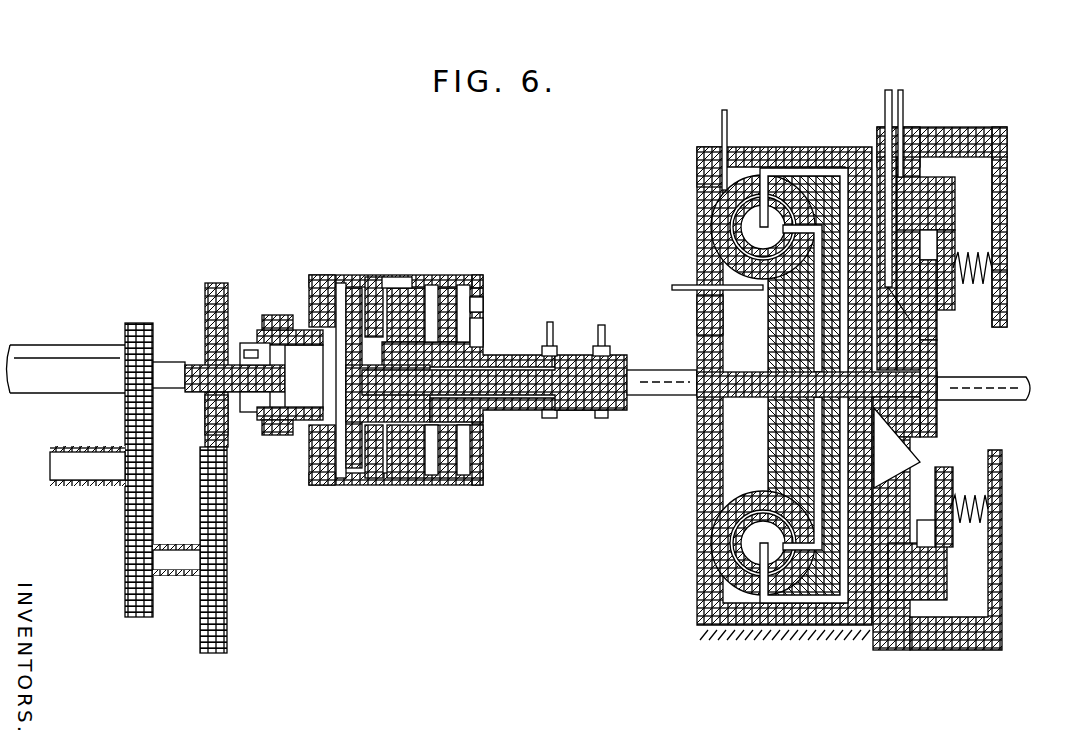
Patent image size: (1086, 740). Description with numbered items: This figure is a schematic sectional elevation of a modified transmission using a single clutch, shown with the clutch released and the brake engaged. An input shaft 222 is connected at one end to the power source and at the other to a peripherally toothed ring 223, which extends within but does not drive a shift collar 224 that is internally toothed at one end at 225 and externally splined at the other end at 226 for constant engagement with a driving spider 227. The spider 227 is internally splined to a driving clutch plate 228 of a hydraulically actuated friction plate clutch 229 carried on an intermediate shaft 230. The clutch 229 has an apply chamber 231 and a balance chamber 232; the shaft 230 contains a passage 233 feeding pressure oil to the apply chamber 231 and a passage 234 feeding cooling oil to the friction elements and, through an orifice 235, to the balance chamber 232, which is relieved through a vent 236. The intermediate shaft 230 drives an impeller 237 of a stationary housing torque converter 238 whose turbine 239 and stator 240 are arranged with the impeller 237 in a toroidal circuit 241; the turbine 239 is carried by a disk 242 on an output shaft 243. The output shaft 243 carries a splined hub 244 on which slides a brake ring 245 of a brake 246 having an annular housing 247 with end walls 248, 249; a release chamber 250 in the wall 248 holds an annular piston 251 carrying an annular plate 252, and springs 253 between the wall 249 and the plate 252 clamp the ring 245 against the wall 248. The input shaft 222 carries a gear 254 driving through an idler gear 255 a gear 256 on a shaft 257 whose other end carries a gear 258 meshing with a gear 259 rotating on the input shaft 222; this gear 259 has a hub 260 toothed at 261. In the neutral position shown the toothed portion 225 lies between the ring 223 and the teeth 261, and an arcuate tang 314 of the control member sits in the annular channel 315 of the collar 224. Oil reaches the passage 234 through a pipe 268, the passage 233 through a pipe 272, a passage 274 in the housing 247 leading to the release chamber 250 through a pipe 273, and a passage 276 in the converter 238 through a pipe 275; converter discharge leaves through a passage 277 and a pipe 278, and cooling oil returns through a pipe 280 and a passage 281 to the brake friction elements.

The input shaft 222 is at (66, 369).
The peripherally toothed ring 223 is at (313, 388).
The shift collar 224 is at (283, 437).
The internal toothed portion 225 is at (250, 343).
The external splined portion 226 is at (305, 323).
The driving spider 227 is at (315, 273).
The driving clutch plate 228 is at (377, 282).
The friction plate clutch 229 is at (410, 259).
The intermediate shaft 230 is at (513, 410).
The apply chamber 231 is at (432, 285).
The balance chamber 232 is at (470, 287).
The passage 233 is at (537, 413).
The passage 234 is at (513, 365).
The orifice 235 is at (483, 305).
The vent 236 is at (483, 323).
The impeller 237 is at (790, 292).
The hydraulic torque converter 238 is at (771, 131).
The turbine 239 is at (792, 190).
The stator 240 is at (713, 206).
The toroidal circuit 241 is at (722, 228).
The disk 242 is at (830, 342).
The output shaft 243 is at (990, 374).
The peripherally splined hub 244 is at (937, 421).
The brake ring 245 is at (973, 328).
The brake 246 is at (976, 117).
The annular housing 247 is at (1007, 116).
The end wall 248 is at (878, 143).
The end wall 249 is at (1007, 176).
The release chamber 250 is at (905, 198).
The annular piston 251 is at (977, 214).
The annular plate 252 is at (953, 243).
The springs 253 is at (1007, 288).
The gear 254 is at (138, 323).
The idler gear 255 is at (120, 494).
The gear 256 is at (125, 571).
The shaft 257 is at (170, 579).
The gear 258 is at (228, 586).
The gear 259 is at (206, 300).
The hub 260 is at (205, 397).
The toothed portion 261 is at (205, 433).
The pipe 268 is at (553, 336).
The pipe 272 is at (613, 305).
The pipe 273 is at (923, 82).
The passage 274 is at (917, 131).
The pipe 275 is at (682, 285).
The passage 276 is at (700, 307).
The passage 277 is at (700, 165).
The pipe 278 is at (722, 126).
The pipe 280 is at (887, 89).
The passage 281 is at (877, 147).
The arcuate tang 314 is at (280, 315).
The annular channel 315 is at (272, 435).